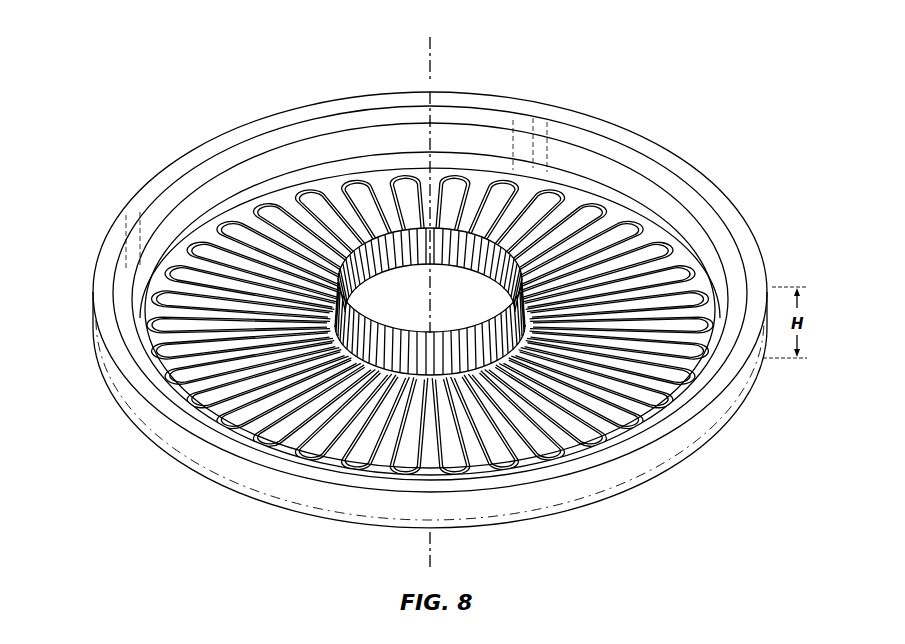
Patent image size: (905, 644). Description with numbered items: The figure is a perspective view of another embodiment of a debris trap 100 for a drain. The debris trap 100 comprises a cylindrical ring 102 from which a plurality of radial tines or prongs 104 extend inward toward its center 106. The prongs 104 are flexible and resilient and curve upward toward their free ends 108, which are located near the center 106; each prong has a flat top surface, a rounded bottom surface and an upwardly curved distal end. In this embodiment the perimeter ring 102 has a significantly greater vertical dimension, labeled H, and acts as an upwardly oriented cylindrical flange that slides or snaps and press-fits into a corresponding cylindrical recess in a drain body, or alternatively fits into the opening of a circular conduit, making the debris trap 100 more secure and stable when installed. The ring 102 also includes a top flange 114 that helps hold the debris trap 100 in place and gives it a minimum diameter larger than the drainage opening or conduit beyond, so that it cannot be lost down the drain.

The debris trap 100 is at (407, 303).
The cylindrical ring 102 is at (698, 222).
The radial tines or prongs 104 is at (277, 457).
The center 106 is at (434, 62).
The free ends 108 is at (482, 215).
The top flange 114 is at (107, 257).